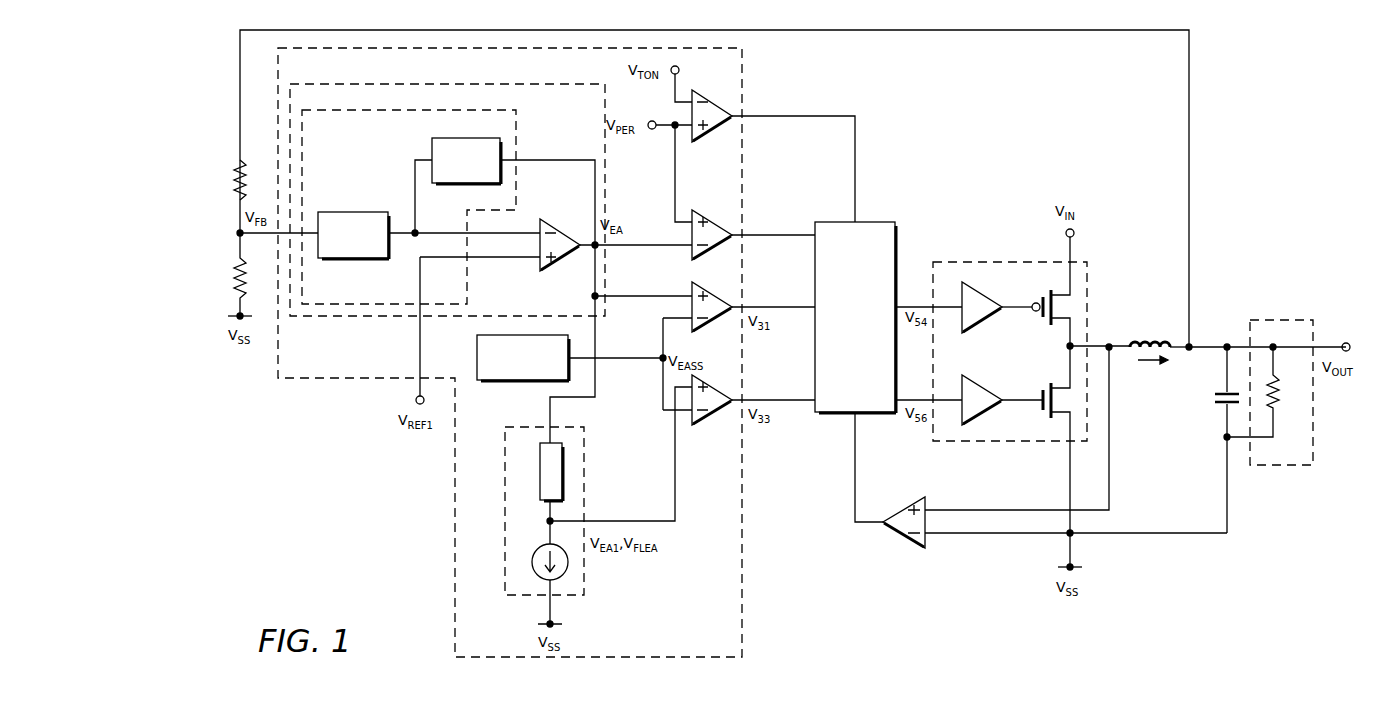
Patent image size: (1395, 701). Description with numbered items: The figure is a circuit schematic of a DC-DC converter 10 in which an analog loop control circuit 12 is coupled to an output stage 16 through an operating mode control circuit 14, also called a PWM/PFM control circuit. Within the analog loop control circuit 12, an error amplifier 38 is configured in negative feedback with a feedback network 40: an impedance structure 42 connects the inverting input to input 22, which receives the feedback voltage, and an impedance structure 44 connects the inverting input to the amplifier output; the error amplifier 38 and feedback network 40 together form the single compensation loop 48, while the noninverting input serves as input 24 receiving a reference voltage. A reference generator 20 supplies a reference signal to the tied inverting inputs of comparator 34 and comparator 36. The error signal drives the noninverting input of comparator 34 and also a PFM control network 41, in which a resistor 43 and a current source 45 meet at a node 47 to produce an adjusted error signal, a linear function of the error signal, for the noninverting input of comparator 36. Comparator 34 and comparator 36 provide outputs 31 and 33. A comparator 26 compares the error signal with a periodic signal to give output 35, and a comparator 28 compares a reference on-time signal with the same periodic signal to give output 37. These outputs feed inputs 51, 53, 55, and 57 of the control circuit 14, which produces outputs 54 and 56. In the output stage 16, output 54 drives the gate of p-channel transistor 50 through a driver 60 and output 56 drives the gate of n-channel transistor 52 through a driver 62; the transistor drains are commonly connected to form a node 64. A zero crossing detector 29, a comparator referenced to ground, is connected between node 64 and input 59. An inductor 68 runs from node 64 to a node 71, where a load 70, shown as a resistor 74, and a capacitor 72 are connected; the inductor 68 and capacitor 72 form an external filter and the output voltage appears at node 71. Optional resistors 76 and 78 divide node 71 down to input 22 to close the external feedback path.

The DC-DC converter 10 is at (331, 578).
The analog loop control circuit 12 is at (310, 380).
The operating mode control circuit 14 is at (832, 220).
The output stage 16 is at (1000, 262).
The reference generator 20 is at (514, 386).
The input 22 is at (238, 233).
The input 24 is at (524, 259).
The comparator 26 is at (722, 220).
The comparator 28 is at (722, 100).
The zero crossing detector 29 is at (898, 540).
The output 31 is at (754, 304).
The output 33 is at (754, 397).
The comparator 34 is at (716, 292).
The output 35 is at (756, 230).
The comparator 36 is at (722, 388).
The output 37 is at (758, 114).
The error amplifier 38 is at (578, 232).
The feedback network 40 is at (428, 111).
The PFM control network 41 is at (504, 454).
The impedance structure 42 is at (346, 212).
The resistor 43 is at (538, 474).
The impedance structure 44 is at (468, 138).
The current source 45 is at (533, 562).
The node 47 is at (548, 522).
The compensation loop 48 is at (428, 86).
The transistor 50 is at (1048, 327).
The input 51 is at (802, 311).
The transistor 52 is at (1048, 422).
The input 53 is at (800, 404).
The output 54 is at (910, 306).
The input 55 is at (800, 240).
The output 56 is at (910, 400).
The input 57 is at (856, 212).
The input 59 is at (858, 420).
The driver 60 is at (980, 294).
The driver 62 is at (980, 388).
The node 64 is at (1062, 350).
The inductor 68 is at (1146, 336).
The load 70 is at (1288, 320).
The node 71 is at (1190, 352).
The capacitor 72 is at (1224, 404).
The resistor 74 is at (1280, 392).
The resistor 76 is at (238, 180).
The resistor 78 is at (236, 272).